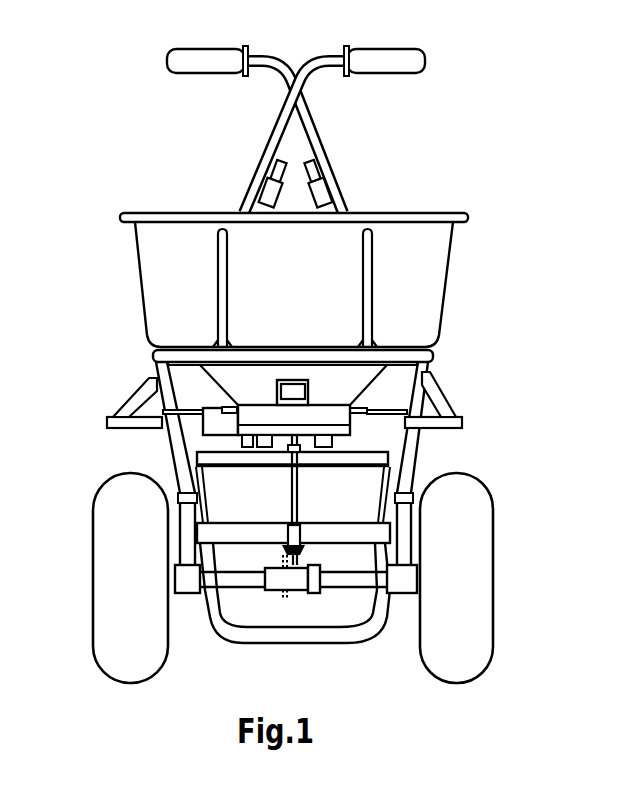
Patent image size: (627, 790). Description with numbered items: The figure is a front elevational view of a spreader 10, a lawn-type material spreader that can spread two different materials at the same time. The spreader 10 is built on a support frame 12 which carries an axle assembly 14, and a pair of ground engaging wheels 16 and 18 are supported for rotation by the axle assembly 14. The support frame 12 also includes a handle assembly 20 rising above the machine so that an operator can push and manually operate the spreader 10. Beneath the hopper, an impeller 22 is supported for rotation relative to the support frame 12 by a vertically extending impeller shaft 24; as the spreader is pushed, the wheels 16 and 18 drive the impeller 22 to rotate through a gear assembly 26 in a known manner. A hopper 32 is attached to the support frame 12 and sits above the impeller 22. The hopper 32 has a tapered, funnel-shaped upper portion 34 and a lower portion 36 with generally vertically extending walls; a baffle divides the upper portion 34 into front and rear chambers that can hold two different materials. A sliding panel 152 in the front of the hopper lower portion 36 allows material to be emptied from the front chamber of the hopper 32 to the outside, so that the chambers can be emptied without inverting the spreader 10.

The spreader 10 is at (500, 189).
The support frame 12 is at (445, 380).
The axle assembly 14 is at (340, 600).
The ground engaging wheel 16 is at (470, 660).
The ground engaging wheel 18 is at (113, 667).
The handle assembly 20 is at (345, 129).
The impeller 22 is at (366, 453).
The impeller shaft 24 is at (297, 502).
The gear assembly 26 is at (276, 607).
The hopper 32 is at (459, 285).
The upper portion 34 is at (146, 316).
The lower portion 36 is at (278, 415).
The sliding panel 152 is at (292, 388).